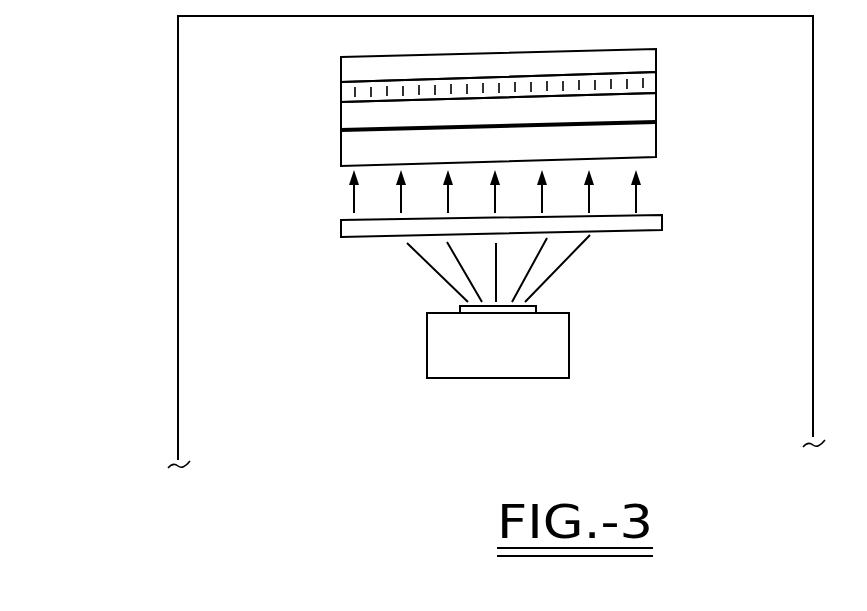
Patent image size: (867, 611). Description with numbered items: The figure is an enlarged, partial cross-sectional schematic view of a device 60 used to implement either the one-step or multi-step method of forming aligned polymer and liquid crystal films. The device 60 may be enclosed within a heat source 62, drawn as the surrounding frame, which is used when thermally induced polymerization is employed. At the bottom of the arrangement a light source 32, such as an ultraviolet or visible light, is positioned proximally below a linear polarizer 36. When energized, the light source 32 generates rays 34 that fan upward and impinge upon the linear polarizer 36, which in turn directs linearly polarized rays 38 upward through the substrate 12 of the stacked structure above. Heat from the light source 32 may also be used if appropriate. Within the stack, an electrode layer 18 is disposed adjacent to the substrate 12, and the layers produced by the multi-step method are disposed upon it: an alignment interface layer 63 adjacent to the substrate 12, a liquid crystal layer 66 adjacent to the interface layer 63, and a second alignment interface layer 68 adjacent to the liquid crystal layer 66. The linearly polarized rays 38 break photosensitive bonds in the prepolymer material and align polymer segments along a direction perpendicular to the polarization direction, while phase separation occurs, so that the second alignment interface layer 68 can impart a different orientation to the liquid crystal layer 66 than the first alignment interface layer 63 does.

The substrate 12 is at (656, 145).
The electrode layer 18 is at (656, 119).
The light source 32 is at (569, 345).
The rays 34 is at (562, 277).
The linear polarizer 36 is at (341, 229).
The linearly polarized rays 38 is at (346, 196).
The device 60 is at (348, 393).
The heat source 62 is at (178, 160).
The alignment interface layer 63 is at (341, 118).
The liquid crystal layer 66 is at (341, 87).
The second alignment interface layer 68 is at (341, 62).